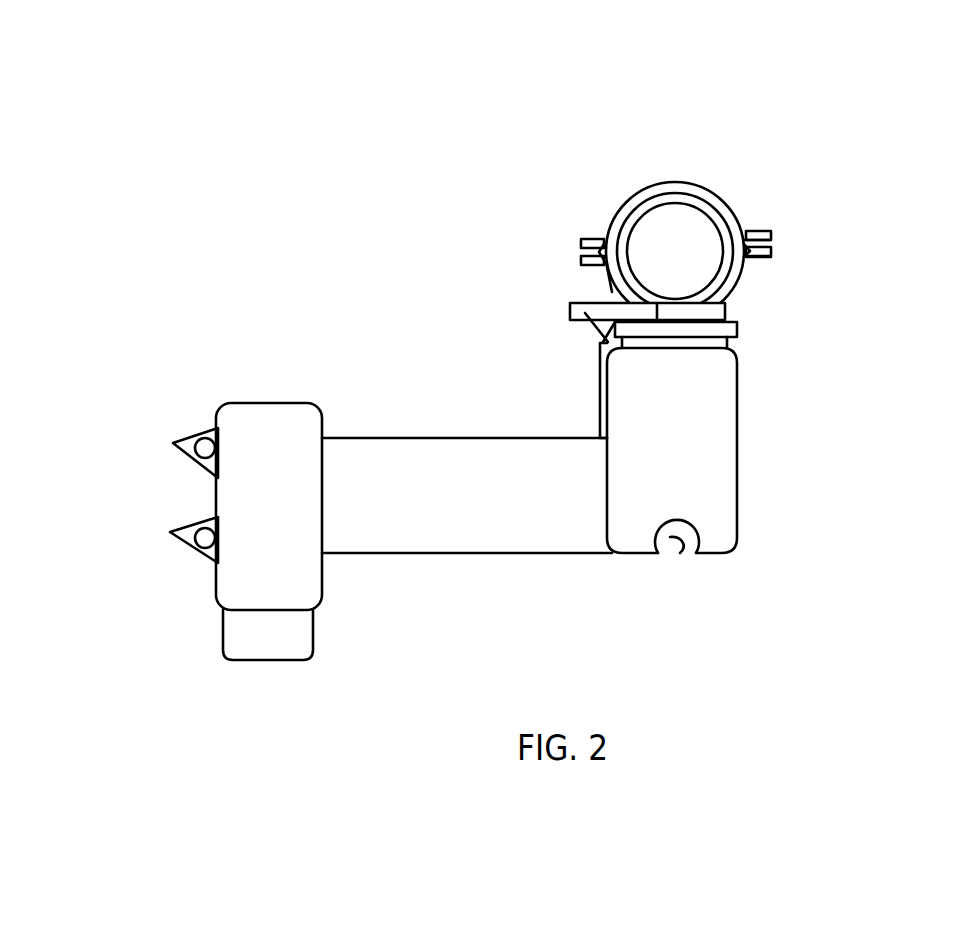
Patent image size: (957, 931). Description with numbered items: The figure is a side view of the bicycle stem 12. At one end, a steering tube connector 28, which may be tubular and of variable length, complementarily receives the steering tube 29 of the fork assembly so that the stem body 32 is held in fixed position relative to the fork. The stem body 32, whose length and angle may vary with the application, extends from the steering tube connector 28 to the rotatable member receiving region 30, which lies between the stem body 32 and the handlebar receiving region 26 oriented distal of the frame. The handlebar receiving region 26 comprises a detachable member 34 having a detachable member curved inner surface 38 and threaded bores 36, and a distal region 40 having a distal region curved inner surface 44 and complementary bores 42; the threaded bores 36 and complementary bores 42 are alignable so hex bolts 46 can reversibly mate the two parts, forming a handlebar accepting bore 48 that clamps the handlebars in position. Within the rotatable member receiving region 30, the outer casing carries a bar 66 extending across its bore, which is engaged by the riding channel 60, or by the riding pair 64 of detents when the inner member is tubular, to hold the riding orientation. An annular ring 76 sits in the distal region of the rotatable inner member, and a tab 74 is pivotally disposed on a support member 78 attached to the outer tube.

The bicycle stem 12 is at (545, 177).
The handlebar receiving region 26 is at (762, 236).
The steering tube connector 28 is at (232, 418).
The steering tube 29 is at (232, 655).
The rotatable member receiving region 30 is at (720, 432).
The stem body 32 is at (457, 530).
The detachable member 34 is at (678, 218).
The threaded bores 36 is at (597, 240).
The detachable member curved inner surface 38 is at (718, 205).
The distal region 40 is at (605, 292).
The complementary bores 42 is at (598, 264).
The distal region curved inner surface 44 is at (738, 282).
The hex bolts 46 is at (582, 257).
The handlebar accepting bore 48 is at (680, 193).
The riding channel 60 is at (775, 561).
The riding pair 64 is at (692, 548).
The bar 66 is at (680, 553).
The tab 74 is at (585, 314).
The annular ring 76 is at (738, 330).
The support member 78 is at (600, 380).